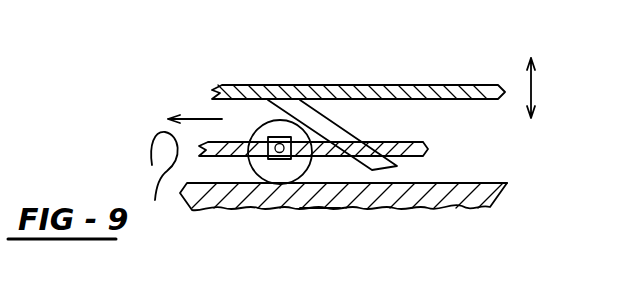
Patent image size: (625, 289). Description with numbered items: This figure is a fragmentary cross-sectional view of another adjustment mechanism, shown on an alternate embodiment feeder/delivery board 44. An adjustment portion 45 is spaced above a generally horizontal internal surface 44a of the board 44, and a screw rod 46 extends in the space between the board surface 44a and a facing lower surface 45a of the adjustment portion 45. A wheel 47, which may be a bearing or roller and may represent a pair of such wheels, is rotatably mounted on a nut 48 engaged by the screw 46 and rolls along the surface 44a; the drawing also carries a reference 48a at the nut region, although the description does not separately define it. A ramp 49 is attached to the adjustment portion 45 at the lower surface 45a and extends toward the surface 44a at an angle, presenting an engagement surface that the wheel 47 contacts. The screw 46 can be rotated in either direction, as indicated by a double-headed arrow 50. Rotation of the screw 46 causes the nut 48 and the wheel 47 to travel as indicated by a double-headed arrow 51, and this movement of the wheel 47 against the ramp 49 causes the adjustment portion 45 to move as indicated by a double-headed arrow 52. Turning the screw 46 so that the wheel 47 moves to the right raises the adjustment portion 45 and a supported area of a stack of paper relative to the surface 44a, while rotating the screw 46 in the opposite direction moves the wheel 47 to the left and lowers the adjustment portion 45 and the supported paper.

The feeder/delivery board 44 is at (501, 232).
The internal surface 44a is at (467, 184).
The adjustment portion 45 is at (303, 85).
The lower surface 45a is at (410, 102).
The screw rod 46 is at (401, 137).
The wheel 47 is at (254, 168).
The nut 48 is at (277, 137).
The pivot point 48a is at (327, 208).
The ramp 49 is at (340, 122).
The double-headed arrow 50 is at (155, 200).
The double-headed arrow 51 is at (194, 118).
The double-headed arrow 52 is at (533, 92).